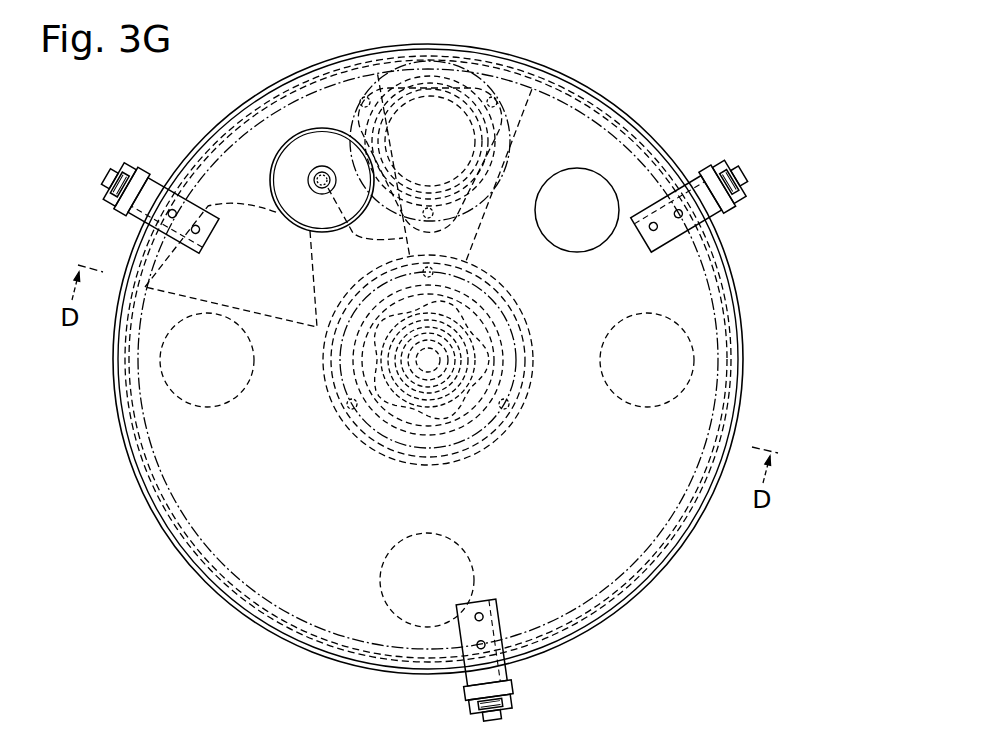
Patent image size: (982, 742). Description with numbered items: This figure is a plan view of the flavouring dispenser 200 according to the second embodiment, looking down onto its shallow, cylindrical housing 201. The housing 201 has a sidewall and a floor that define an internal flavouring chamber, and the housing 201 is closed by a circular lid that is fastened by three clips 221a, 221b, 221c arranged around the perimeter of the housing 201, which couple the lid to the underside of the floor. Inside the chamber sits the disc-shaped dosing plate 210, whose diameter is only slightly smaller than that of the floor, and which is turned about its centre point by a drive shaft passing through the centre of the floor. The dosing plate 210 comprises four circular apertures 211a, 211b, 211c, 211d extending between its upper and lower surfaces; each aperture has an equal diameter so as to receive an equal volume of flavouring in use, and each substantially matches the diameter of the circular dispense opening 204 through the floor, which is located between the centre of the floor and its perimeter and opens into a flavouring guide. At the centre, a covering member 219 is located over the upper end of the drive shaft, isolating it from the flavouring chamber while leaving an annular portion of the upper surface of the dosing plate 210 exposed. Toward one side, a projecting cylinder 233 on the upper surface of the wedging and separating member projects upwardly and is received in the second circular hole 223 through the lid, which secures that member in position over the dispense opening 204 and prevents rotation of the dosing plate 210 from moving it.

The flavouring dispenser 200 is at (702, 100).
The housing 201 is at (745, 326).
The circular dispense opening 204 is at (410, 122).
The dosing plate 210 is at (253, 549).
The circular aperture 211a is at (693, 377).
The circular aperture 211b is at (391, 613).
The circular aperture 211c is at (165, 393).
The circular aperture 211d is at (462, 118).
The covering member 219 is at (443, 422).
The clip 221a is at (743, 206).
The clip 221b is at (512, 700).
The clip 221c is at (128, 208).
The second circular hole 223 is at (292, 178).
The projecting cylinder 233 is at (297, 145).